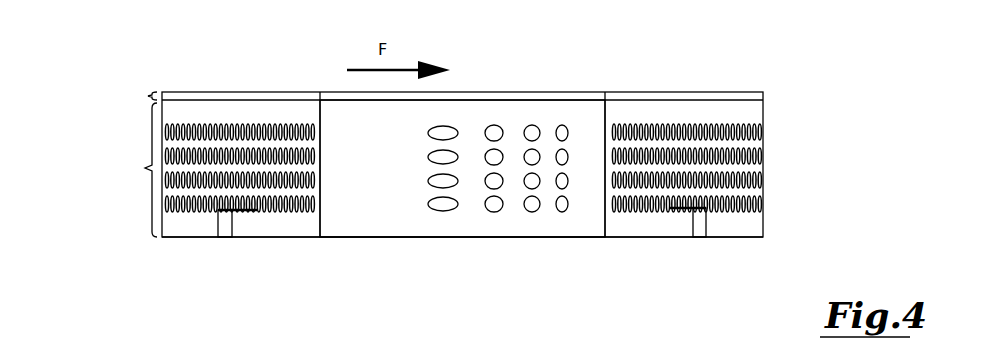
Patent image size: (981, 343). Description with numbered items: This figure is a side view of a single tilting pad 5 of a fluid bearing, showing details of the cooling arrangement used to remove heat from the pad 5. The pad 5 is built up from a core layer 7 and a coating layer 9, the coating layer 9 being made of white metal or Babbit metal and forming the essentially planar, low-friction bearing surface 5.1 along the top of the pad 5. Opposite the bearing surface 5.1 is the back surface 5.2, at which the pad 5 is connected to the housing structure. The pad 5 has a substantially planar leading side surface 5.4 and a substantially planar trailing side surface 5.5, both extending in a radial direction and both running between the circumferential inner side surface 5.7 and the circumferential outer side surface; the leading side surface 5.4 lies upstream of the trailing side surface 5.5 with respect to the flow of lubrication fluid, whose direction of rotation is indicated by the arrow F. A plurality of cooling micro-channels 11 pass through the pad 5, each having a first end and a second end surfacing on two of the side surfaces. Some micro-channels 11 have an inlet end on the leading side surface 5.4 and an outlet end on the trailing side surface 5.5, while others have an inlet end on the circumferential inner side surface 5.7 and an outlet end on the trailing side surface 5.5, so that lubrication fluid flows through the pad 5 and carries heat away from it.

The pad 5 is at (122, 53).
The bearing surface 5.1 is at (262, 90).
The back surface 5.2 is at (398, 238).
The leading side surface 5.4 is at (257, 222).
The trailing side surface 5.5 is at (690, 212).
The circumferential inner side surface 5.7 is at (475, 110).
The core layer 7 is at (142, 170).
The coating layer 9 is at (144, 97).
The cooling micro-channels 11 is at (300, 133).